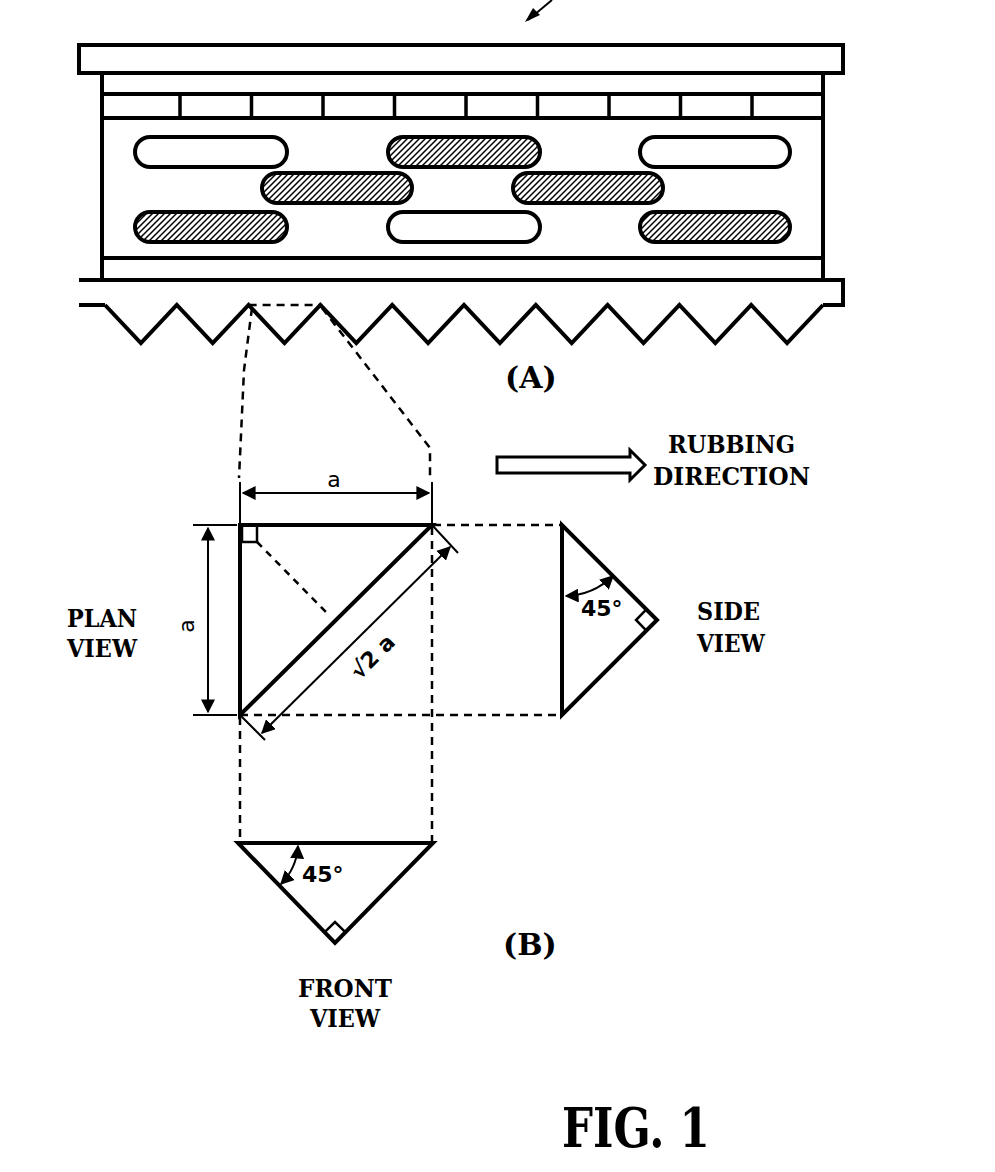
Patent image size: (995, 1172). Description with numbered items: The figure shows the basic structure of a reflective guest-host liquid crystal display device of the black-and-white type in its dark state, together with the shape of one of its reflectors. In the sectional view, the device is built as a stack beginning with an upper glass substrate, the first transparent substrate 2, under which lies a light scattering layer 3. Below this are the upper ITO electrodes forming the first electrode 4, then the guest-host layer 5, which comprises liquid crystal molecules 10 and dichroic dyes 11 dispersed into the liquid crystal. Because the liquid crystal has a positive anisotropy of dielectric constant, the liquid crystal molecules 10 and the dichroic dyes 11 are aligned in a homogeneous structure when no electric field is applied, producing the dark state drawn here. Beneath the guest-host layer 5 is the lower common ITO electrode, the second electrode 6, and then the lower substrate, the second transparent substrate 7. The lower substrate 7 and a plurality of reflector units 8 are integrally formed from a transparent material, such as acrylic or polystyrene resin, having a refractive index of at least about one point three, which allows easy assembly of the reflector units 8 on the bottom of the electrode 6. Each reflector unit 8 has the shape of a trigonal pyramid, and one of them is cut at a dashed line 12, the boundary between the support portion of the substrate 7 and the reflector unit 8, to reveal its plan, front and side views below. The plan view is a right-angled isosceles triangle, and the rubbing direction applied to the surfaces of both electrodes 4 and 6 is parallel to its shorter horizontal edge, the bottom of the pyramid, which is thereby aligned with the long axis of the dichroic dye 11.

The first transparent substrate 2 is at (835, 54).
The light scattering layer 3 is at (812, 83).
The first electrode 4 is at (810, 105).
The guest-host layer 5 is at (780, 193).
The liquid crystal molecules 10 is at (773, 153).
The dichroic dyes 11 is at (790, 228).
The second electrode 6 is at (803, 267).
The second transparent substrate 7 is at (822, 295).
The reflector units 8 is at (797, 325).
The dashed line 12 is at (283, 308).